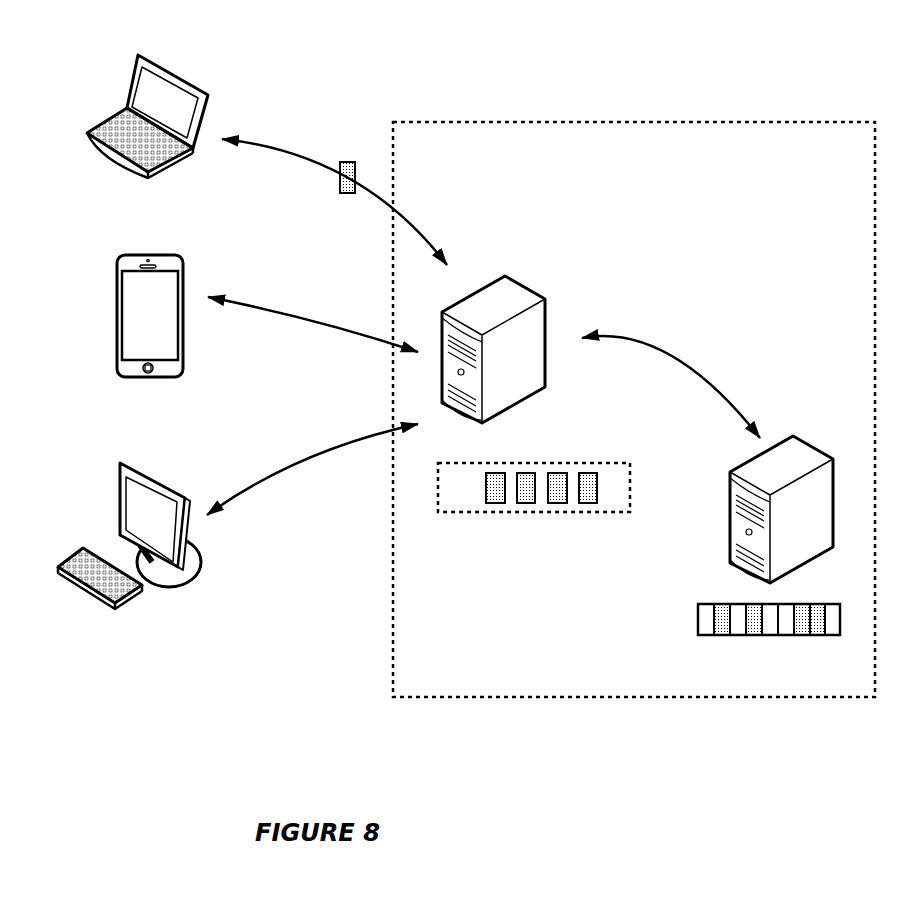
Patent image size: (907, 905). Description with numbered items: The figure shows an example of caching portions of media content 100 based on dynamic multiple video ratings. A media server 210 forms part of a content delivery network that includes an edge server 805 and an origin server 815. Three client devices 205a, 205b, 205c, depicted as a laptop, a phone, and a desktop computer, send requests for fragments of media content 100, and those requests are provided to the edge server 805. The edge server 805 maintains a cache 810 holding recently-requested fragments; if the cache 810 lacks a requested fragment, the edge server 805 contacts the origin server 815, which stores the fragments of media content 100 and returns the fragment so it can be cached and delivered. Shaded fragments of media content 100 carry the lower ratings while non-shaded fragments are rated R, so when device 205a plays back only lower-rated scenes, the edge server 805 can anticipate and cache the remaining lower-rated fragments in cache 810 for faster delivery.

The media content 100 is at (687, 617).
The device 205a is at (170, 70).
The device 205b is at (148, 256).
The device 205c is at (157, 475).
The media server 210 is at (768, 122).
The edge server 805 is at (523, 290).
The cache 810 is at (518, 463).
The origin server 815 is at (730, 472).